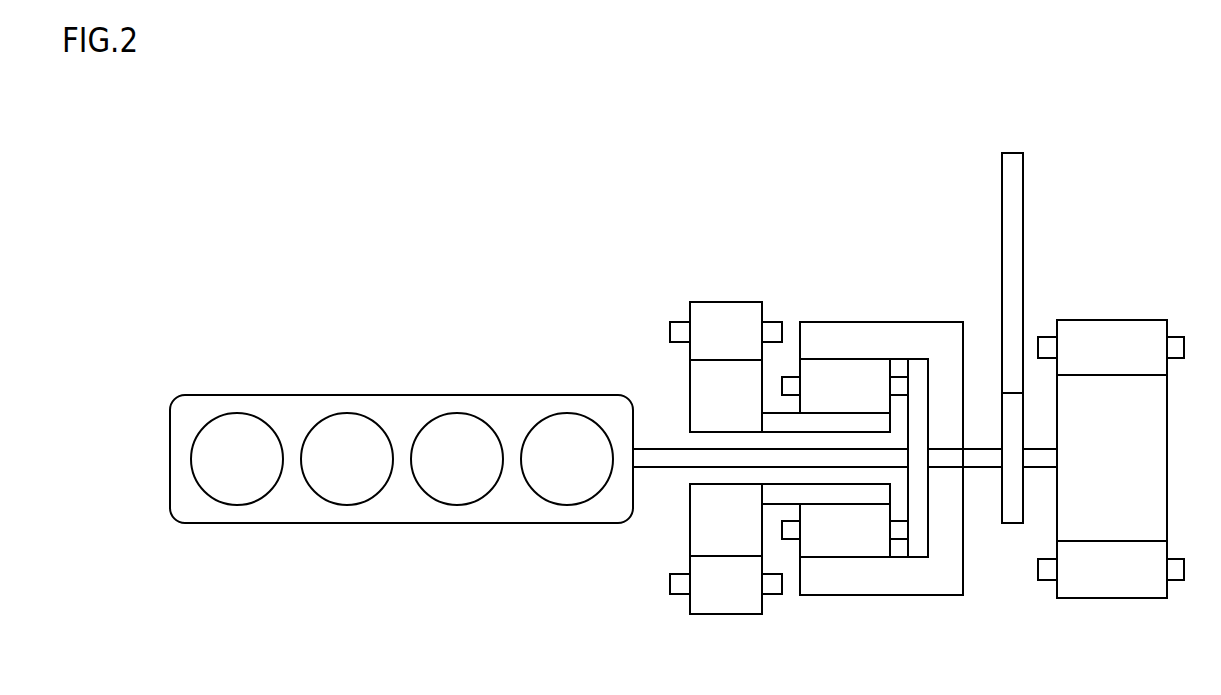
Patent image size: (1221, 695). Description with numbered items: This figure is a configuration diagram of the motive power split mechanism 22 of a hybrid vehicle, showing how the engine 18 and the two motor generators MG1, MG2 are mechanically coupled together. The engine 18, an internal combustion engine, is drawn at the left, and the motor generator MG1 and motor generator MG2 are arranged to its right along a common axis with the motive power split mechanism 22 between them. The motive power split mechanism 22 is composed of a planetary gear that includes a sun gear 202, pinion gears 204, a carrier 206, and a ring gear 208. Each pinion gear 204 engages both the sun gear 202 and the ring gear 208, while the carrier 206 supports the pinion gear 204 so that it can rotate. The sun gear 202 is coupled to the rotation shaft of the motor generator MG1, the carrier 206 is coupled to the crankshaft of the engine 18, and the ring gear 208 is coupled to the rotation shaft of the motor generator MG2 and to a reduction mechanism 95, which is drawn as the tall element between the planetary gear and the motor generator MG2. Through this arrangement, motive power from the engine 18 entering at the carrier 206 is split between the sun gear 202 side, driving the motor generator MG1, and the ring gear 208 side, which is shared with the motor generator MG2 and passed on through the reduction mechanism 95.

The engine 18 is at (400, 395).
The motive power split mechanism 22 is at (880, 458).
The sun gear 202 is at (823, 504).
The pinion gears 204 is at (850, 558).
The carrier 206 is at (905, 494).
The ring gear 208 is at (952, 598).
The reduction mechanism 95 is at (1039, 127).
The motor generator MG1 is at (727, 302).
The motor generator MG2 is at (1115, 320).